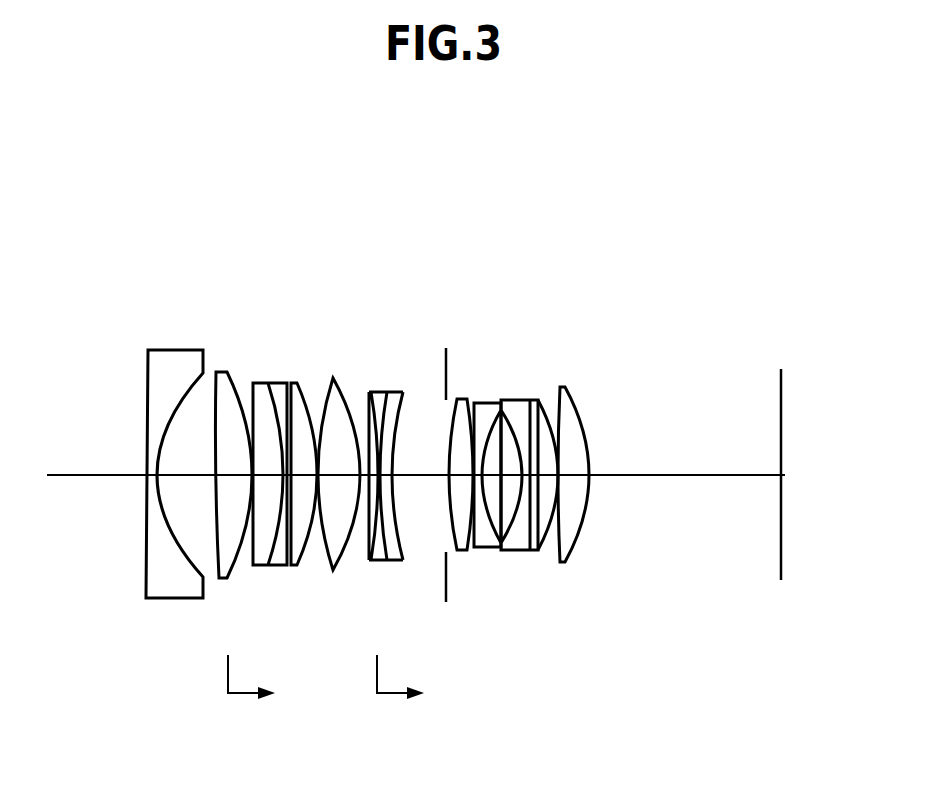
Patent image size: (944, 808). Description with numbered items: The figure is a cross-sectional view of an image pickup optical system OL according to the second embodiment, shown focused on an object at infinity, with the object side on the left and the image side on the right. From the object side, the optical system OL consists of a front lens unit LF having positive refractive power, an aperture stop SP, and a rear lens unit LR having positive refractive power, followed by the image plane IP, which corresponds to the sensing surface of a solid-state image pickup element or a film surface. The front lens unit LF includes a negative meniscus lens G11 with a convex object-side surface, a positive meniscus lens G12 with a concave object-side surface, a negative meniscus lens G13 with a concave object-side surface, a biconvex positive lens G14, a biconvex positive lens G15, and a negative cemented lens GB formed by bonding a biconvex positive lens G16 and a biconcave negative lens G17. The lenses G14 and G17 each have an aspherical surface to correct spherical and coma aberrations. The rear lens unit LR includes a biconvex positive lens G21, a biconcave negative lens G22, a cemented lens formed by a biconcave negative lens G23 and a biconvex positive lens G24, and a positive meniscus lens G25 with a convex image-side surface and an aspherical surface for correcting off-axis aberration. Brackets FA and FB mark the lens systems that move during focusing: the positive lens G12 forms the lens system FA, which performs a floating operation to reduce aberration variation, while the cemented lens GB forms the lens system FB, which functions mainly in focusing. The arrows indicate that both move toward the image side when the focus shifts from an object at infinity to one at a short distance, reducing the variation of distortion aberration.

The optical system OL is at (593, 195).
The front lens unit LF is at (424, 267).
The rear lens unit LR is at (589, 320).
The lens system FA is at (253, 335).
The lens system FB is at (407, 335).
The cemented lens GB is at (433, 608).
The aperture stop SP is at (446, 600).
The image plane IP is at (781, 393).
The negative lens G11 is at (153, 590).
The positive lens G12 is at (222, 573).
The negative lens G13 is at (270, 567).
The positive lens G14 is at (297, 566).
The positive lens G15 is at (333, 555).
The positive lens G16 is at (371, 536).
The negative lens G17 is at (388, 553).
The positive lens G21 is at (453, 532).
The negative lens G22 is at (485, 543).
The negative lens G23 is at (517, 543).
The positive lens G24 is at (542, 540).
The positive lens G25 is at (573, 535).